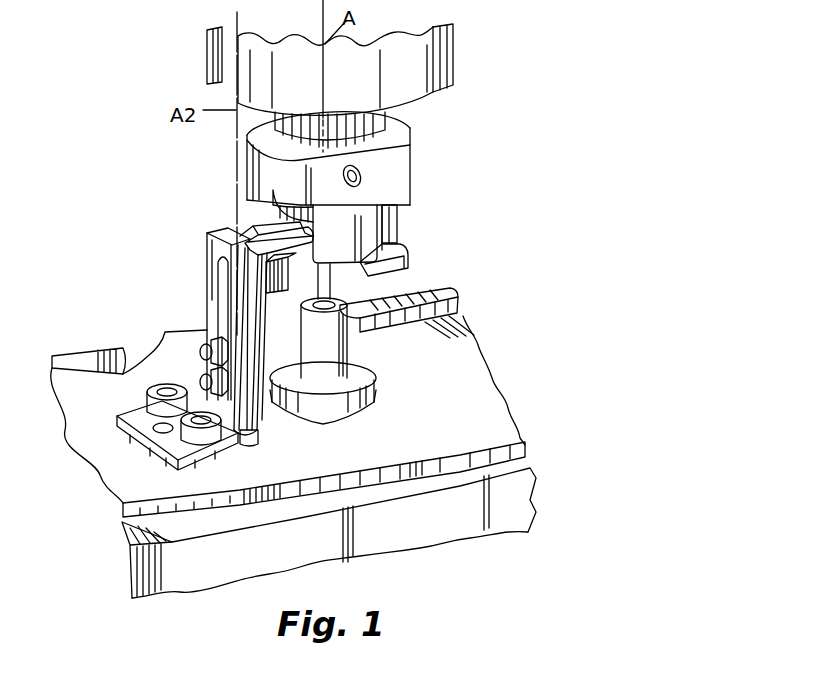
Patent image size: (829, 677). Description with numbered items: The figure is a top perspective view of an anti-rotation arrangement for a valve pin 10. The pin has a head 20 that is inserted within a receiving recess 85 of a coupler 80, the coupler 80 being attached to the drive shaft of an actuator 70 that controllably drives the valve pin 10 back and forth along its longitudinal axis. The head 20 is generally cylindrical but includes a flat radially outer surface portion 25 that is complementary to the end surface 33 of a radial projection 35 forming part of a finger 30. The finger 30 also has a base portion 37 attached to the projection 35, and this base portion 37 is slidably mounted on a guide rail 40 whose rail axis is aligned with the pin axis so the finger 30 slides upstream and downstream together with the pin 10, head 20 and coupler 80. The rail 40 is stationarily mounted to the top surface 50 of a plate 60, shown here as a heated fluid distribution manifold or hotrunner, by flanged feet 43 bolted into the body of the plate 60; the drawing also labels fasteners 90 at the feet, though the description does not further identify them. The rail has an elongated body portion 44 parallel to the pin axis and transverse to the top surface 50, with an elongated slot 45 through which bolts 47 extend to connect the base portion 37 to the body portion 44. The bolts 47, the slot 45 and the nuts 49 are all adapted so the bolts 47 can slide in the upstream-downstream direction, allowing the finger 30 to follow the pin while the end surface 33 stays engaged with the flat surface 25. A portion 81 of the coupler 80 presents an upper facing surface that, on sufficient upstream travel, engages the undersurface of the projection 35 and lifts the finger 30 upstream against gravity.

The valve pin 10 is at (333, 288).
The head 20 is at (360, 228).
The flat radially outer surface portion 25 is at (300, 258).
The finger 30 is at (214, 222).
The end surface 33 is at (285, 215).
The radial projection 35 is at (270, 215).
The base portion 37 is at (290, 282).
The guide rail 40 is at (194, 259).
The flanged feet 43 is at (122, 418).
The elongated body portion 44 is at (230, 300).
The elongated slot 45 is at (222, 282).
The bolts 47 is at (200, 352).
The nuts 49 is at (226, 392).
The top surface 50 is at (450, 417).
The plate 60 is at (101, 512).
The actuator 70 is at (457, 73).
The coupler 80 is at (412, 158).
The portion of the pin head coupler 81 is at (330, 300).
The receiving recess 85 is at (395, 216).
The socket head screws 90 is at (190, 435).